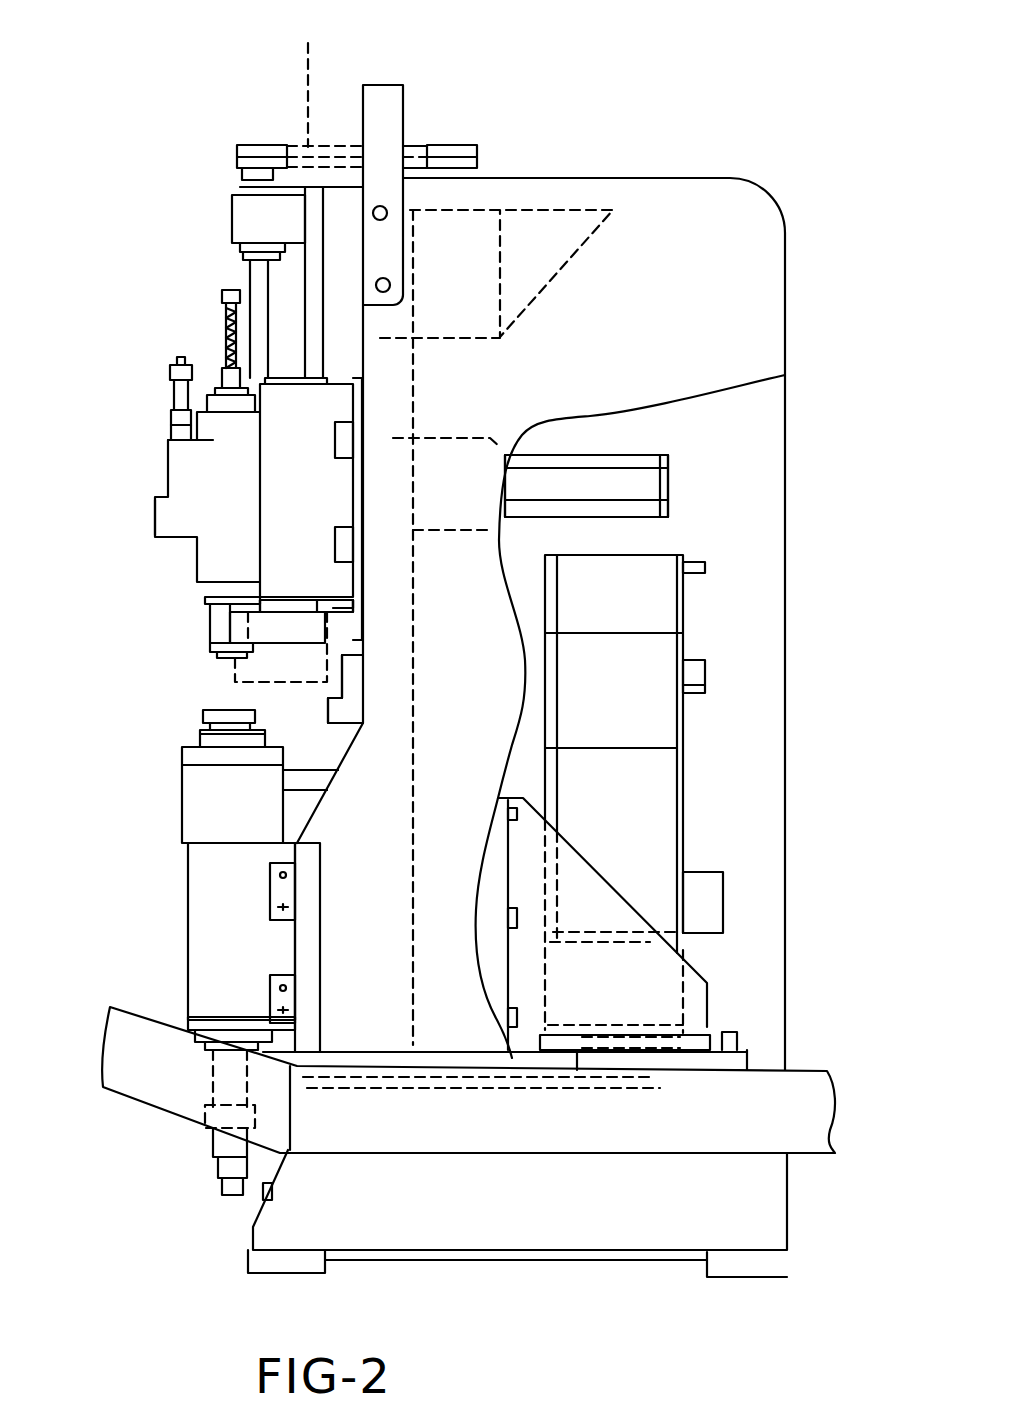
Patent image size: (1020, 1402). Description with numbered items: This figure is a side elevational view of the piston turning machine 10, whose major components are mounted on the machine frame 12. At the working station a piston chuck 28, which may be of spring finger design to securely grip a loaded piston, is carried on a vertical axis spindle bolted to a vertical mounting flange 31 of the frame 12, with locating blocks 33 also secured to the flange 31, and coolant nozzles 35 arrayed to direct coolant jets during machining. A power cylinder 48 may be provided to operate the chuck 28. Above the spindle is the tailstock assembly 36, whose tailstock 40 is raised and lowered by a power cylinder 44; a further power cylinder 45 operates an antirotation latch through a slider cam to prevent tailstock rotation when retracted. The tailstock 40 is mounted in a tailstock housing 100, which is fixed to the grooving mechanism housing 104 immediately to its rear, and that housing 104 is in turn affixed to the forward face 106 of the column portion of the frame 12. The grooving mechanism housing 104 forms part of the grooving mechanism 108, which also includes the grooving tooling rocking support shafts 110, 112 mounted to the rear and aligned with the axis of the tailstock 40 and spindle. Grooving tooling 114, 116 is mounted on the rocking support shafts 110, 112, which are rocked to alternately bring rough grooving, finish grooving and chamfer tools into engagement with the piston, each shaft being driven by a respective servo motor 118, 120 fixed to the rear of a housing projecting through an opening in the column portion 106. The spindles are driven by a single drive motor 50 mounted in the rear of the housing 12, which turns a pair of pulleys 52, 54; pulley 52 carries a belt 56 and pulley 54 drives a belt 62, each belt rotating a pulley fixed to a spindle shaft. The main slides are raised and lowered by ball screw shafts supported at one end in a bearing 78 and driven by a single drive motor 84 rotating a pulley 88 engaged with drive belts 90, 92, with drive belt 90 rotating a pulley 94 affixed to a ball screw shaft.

The piston turning machine 10 is at (688, 100).
The machine frame 12 is at (607, 140).
The piston chuck 28 is at (202, 717).
The vertical mounting flange 31 is at (292, 855).
The locating blocks 33 is at (270, 887).
The coolant nozzles 35 is at (337, 725).
The tailstock assembly 36 is at (130, 480).
The tailstock 40 is at (210, 645).
The power cylinder 44 is at (218, 305).
The power cylinder 45 is at (170, 375).
The power cylinder 48 is at (215, 1145).
The drive motor 50 is at (737, 693).
The pulley 52 is at (667, 1052).
The pulley 54 is at (660, 1088).
The belt 56 is at (478, 1015).
The belt 62 is at (517, 1088).
The bearing 78 is at (232, 230).
The drive motor 84 is at (498, 268).
The pulley 88 is at (477, 163).
The drive belt 90 is at (311, 80).
The drive belt 92 is at (296, 180).
The pulley 94 is at (237, 150).
The tailstock housing 100 is at (152, 517).
The grooving mechanism housing 104 is at (258, 518).
The column portion forward face 106 is at (360, 262).
The grooving mechanism 108 is at (213, 440).
The grooving tooling rocking support shaft 110 is at (307, 598).
The grooving tooling rocking support shaft 112 is at (306, 606).
The grooving tooling 114 is at (340, 643).
The grooving tooling 116 is at (345, 689).
The servo motor 118 is at (587, 455).
The servo motor 120 is at (586, 486).